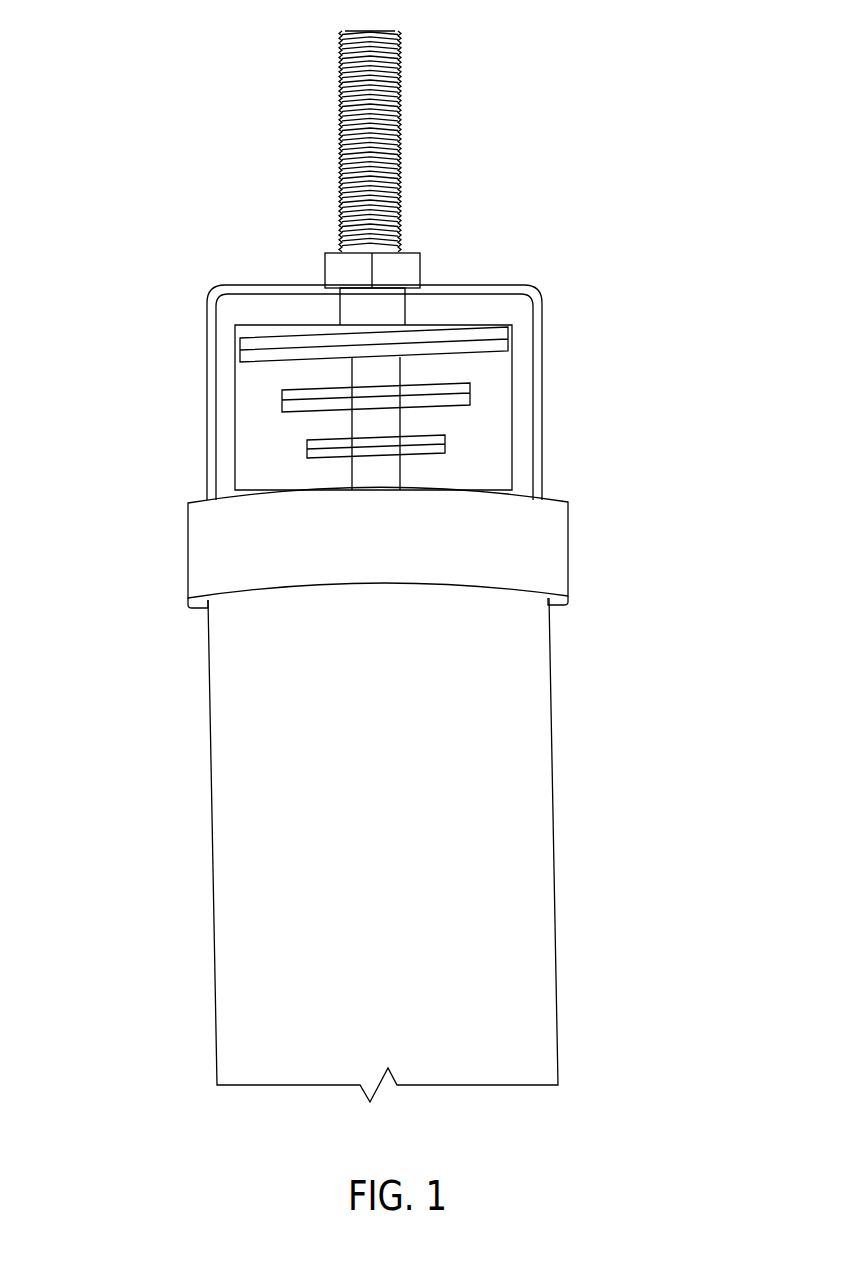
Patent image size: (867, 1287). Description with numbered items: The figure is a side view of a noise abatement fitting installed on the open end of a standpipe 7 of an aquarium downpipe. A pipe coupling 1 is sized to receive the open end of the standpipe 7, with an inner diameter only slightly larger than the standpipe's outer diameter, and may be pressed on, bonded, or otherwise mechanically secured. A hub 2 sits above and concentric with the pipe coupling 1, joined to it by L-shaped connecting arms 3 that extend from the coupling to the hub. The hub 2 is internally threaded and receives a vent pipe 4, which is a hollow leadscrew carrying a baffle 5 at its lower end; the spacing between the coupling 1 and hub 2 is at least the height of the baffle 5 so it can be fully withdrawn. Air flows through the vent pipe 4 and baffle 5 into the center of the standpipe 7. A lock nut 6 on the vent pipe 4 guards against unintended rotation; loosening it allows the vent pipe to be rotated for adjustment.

The pipe coupling 1 is at (215, 537).
The hub 2 is at (385, 312).
The connecting arms 3 is at (523, 422).
The vent pipe 4 is at (395, 150).
The baffle 5 is at (288, 406).
The lock nut 6 is at (340, 265).
The standpipe 7 is at (495, 758).